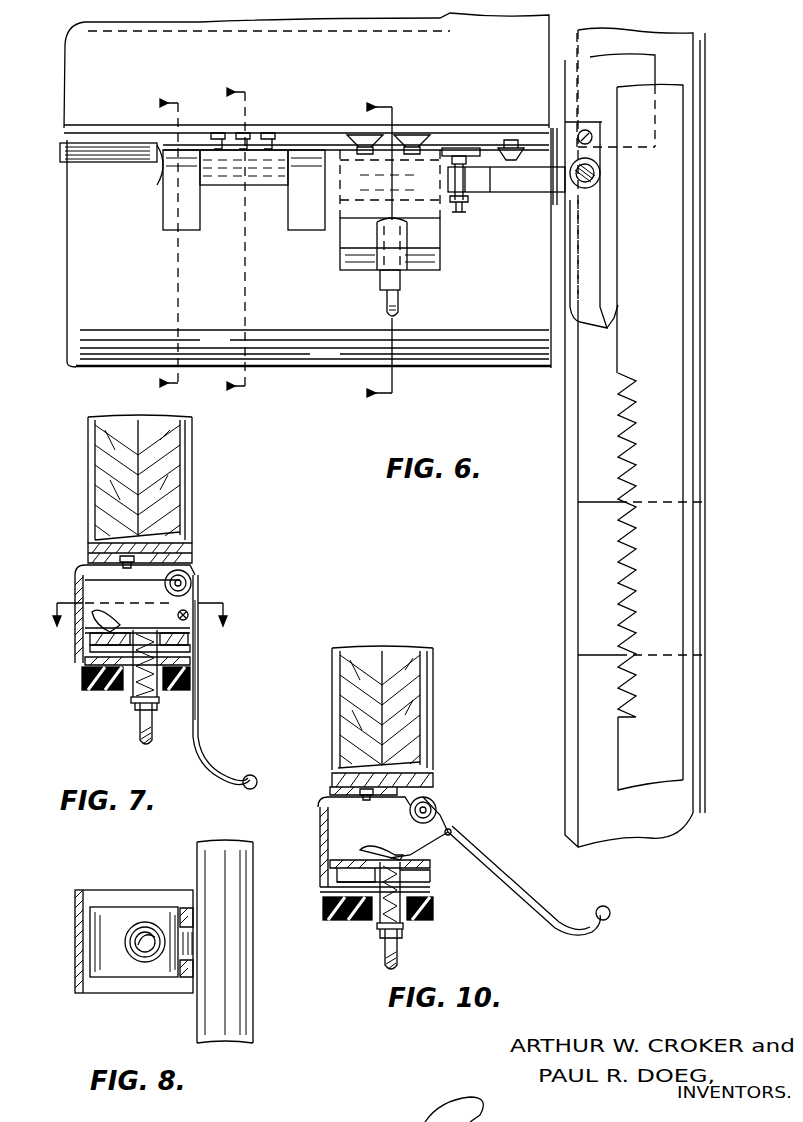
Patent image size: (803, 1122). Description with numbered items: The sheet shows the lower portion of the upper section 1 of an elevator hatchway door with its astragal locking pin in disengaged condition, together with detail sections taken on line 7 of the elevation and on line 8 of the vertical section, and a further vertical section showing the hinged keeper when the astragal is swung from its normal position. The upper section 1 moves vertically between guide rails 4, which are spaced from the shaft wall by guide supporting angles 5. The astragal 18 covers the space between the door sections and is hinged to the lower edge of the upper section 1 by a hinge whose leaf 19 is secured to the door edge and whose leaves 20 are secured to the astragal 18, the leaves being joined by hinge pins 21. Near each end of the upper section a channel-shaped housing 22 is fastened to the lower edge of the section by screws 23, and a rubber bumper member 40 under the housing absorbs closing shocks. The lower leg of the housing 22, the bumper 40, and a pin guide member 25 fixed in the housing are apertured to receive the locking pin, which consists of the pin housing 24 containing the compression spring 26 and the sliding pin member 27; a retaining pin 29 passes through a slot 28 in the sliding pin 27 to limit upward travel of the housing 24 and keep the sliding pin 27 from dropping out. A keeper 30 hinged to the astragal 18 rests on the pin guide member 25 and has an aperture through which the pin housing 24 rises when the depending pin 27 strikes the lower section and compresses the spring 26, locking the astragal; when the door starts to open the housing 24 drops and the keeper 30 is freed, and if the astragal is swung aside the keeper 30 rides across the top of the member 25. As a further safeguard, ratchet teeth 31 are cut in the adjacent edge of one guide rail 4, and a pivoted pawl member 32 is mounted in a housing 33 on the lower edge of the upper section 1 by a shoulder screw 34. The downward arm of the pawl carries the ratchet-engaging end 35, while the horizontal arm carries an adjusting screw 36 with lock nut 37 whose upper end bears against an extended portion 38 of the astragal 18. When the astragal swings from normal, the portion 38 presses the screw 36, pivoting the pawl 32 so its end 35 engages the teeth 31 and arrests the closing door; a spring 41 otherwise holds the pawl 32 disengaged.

In FIG. 6, the upper section of the door 1 is at (96, 53).
In FIG. 7, the upper section of the door 1 is at (165, 481).
In FIG. 10, the upper section of the door 1 is at (410, 726).
In FIG. 6, the guide rails 4 is at (676, 183).
In FIG. 6, the guide supporting angles 5 is at (686, 60).
In FIG. 6, the section line 7— 7 is at (570, 629).
In FIG. 7, the section line 8— 8 is at (137, 605).
In FIG. 6, the astragal 18 is at (100, 163).
In FIG. 7, the astragal 18 is at (200, 723).
In FIG. 8, the astragal 18 is at (245, 990).
In FIG. 10, the astragal 18 is at (520, 893).
In FIG. 6, the hinge leaf 19 is at (232, 211).
In FIG. 6, the hinge leaves 20 is at (290, 250).
In FIG. 10, the hinge leaves 20 is at (455, 826).
In FIG. 6, the hinge pins 21 is at (158, 168).
In FIG. 7, the hinge pins 21 is at (194, 576).
In FIG. 10, the hinge pins 21 is at (440, 808).
In FIG. 6, the channel-shaped housing 22 is at (352, 226).
In FIG. 7, the channel-shaped housing 22 is at (78, 572).
In FIG. 8, the channel-shaped housing 22 is at (75, 906).
In FIG. 10, the channel-shaped housing 22 is at (318, 812).
In FIG. 6, the screws 23 is at (365, 138).
In FIG. 7, the screws 23 is at (192, 553).
In FIG. 10, the screws 23 is at (355, 797).
In FIG. 7, the pin housing 24 is at (160, 651).
In FIG. 8, the pin housing 24 is at (145, 959).
In FIG. 10, the pin housing 24 is at (400, 877).
In FIG. 7, the pin guide member 25 is at (90, 646).
In FIG. 8, the pin guide member 25 is at (158, 898).
In FIG. 10, the pin guide member 25 is at (330, 869).
In FIG. 7, the compression spring 26 is at (135, 691).
In FIG. 10, the compression spring 26 is at (376, 921).
In FIG. 6, the sliding pin member 27 is at (385, 311).
In FIG. 7, the sliding pin member 27 is at (141, 741).
In FIG. 10, the sliding pin member 27 is at (383, 969).
In FIG. 6, the slot 28 is at (386, 297).
In FIG. 7, the slot 28 is at (143, 721).
In FIG. 10, the slot 28 is at (397, 954).
In FIG. 6, the retaining pin 29 is at (402, 278).
In FIG. 7, the retaining pin 29 is at (155, 702).
In FIG. 10, the retaining pin 29 is at (405, 928).
In FIG. 6, the keeper 30 is at (404, 202).
In FIG. 7, the keeper 30 is at (112, 621).
In FIG. 8, the keeper 30 is at (112, 921).
In FIG. 10, the keeper 30 is at (379, 860).
In FIG. 6, the ratchet teeth 31 is at (621, 562).
In FIG. 6, the pivoted pawl member 32 is at (478, 189).
In FIG. 6, the housing 33 is at (503, 150).
In FIG. 6, the shoulder screw 34 is at (600, 171).
In FIG. 6, the ratchet-engaging end 35 is at (612, 321).
In FIG. 6, the adjusting screw 36 is at (460, 214).
In FIG. 6, the lock nut 37 is at (467, 202).
In FIG. 6, the extended portion of the astragal 38 is at (460, 147).
In FIG. 6, the rubber bumper member 40 is at (352, 267).
In FIG. 7, the rubber bumper member 40 is at (82, 681).
In FIG. 10, the rubber bumper member 40 is at (323, 911).
In FIG. 6, the spring 41 is at (605, 192).